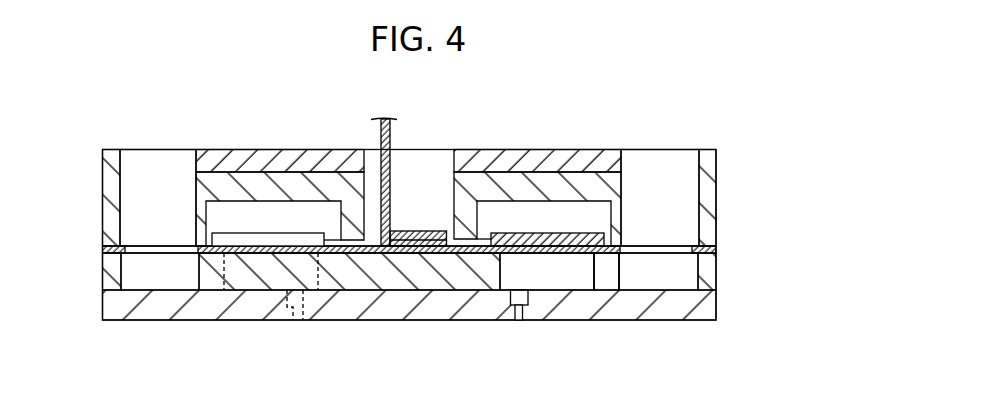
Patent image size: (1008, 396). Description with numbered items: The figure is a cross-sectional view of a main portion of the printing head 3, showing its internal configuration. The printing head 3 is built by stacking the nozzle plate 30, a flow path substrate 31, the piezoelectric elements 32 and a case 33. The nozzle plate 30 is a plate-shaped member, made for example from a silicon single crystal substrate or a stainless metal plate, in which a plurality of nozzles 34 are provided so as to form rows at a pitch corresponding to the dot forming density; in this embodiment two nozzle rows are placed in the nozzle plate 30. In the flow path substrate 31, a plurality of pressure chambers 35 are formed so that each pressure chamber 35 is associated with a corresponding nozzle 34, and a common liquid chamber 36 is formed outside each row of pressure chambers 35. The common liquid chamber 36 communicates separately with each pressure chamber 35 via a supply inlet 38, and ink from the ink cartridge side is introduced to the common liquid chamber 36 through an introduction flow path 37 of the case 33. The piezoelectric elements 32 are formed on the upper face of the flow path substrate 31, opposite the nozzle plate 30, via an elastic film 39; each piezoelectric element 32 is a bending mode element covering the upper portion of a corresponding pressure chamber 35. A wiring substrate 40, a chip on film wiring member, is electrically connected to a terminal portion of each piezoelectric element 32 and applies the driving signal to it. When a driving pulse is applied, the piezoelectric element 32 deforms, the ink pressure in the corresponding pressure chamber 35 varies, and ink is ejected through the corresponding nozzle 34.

The printing head 3 is at (709, 135).
The nozzle plate 30 is at (707, 306).
The flow path substrate 31 is at (706, 273).
The piezoelectric element 32 is at (278, 243).
The case 33 is at (706, 164).
The nozzle 34 is at (292, 321).
The pressure chamber 35 is at (260, 268).
The common liquid chamber 36 is at (155, 272).
The introduction flow path 37 is at (138, 205).
The supply inlet 38 is at (611, 268).
The elastic film 39 is at (707, 251).
The wiring substrate 40 is at (386, 190).